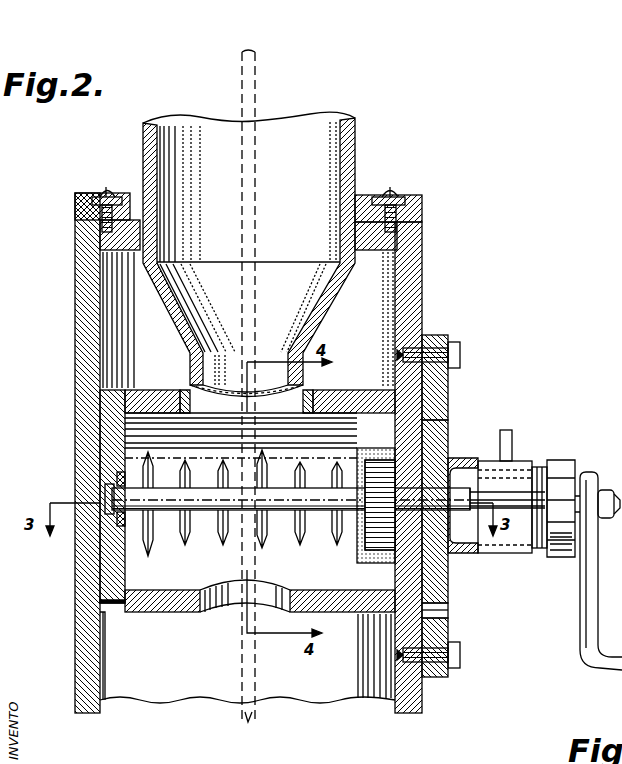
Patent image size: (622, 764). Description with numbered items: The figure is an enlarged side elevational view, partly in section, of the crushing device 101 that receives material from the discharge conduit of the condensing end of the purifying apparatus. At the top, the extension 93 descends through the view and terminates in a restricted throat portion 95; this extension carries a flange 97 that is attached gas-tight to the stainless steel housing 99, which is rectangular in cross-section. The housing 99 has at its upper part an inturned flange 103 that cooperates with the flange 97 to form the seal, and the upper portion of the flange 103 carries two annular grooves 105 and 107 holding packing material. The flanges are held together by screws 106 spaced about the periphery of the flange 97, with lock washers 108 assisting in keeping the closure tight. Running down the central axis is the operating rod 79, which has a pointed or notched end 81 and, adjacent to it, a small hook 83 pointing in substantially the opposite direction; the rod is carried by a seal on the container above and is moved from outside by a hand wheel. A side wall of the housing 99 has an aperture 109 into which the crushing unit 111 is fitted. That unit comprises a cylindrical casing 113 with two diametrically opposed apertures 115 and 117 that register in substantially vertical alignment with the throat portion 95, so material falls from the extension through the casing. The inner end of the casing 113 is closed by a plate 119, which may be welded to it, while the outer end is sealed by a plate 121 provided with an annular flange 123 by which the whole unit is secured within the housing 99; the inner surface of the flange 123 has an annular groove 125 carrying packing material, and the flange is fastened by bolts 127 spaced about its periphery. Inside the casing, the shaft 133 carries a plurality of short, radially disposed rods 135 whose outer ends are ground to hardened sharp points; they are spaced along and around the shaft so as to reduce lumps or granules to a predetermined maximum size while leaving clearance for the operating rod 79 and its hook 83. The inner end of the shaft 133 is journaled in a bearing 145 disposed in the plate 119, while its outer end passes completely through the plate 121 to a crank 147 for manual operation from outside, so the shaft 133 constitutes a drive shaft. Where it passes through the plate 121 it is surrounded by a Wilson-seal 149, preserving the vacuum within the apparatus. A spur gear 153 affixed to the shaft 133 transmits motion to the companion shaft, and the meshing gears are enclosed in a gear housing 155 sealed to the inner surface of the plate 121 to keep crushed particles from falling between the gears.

The operating rod 79 is at (253, 88).
The pointed and/or notched end 81 is at (240, 716).
The small hook 83 is at (238, 700).
The extension 93 is at (358, 122).
The restricted throat portion 95 is at (290, 389).
The flange 97 is at (76, 204).
The housing 99 is at (80, 320).
The crushing device 101 is at (135, 462).
The inturned flange 103 is at (396, 255).
The annular groove 105 is at (77, 240).
The screws 106 is at (112, 190).
The annular groove 107 is at (120, 262).
The lock washers 108 is at (100, 200).
The aperture 109 is at (436, 402).
The crushing unit 111 is at (466, 432).
The cylindrical casing 113 is at (138, 388).
The aperture 115 is at (188, 392).
The aperture 117 is at (216, 613).
The plate 119 is at (112, 420).
The plate 121 is at (449, 602).
The annular flange 123 is at (440, 680).
The annular groove 125 is at (446, 632).
The bolts 127 is at (461, 352).
The shaft 133 is at (128, 532).
The short rods 135 is at (127, 585).
The bearing 145 is at (116, 482).
The crank 147 is at (580, 606).
The Wilson-seal 149 is at (518, 462).
The spur gear 153 is at (357, 548).
The gear housing 155 is at (386, 564).